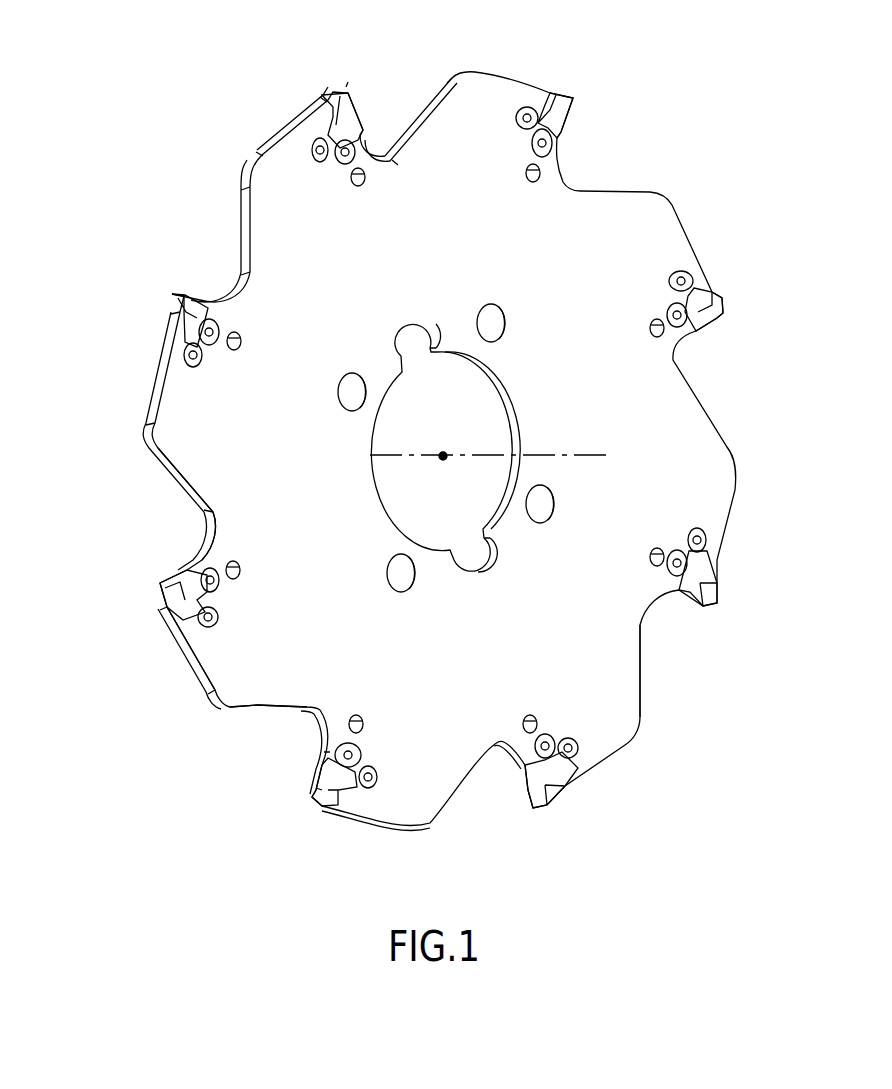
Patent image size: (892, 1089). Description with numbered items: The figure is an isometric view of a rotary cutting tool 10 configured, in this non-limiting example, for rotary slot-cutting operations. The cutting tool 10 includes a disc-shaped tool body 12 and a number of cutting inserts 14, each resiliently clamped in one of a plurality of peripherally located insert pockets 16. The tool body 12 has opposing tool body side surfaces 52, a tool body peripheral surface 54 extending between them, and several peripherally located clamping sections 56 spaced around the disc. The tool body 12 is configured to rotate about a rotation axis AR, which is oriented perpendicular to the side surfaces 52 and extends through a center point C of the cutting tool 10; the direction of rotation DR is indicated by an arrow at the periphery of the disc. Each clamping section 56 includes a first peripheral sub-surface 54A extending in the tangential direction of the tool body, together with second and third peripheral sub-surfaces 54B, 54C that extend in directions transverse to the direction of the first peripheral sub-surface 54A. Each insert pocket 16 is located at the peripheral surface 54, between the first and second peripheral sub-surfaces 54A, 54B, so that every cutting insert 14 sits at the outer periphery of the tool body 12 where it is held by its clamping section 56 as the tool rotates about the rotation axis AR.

The rotary cutting tool 10 is at (263, 77).
The tool body 12 is at (480, 122).
The cutting insert 14 is at (200, 297).
The insert pocket 16 is at (183, 353).
The tool body side surface 52 is at (623, 687).
The tool body peripheral surface 54 is at (180, 477).
The first peripheral sub-surface 54A is at (190, 658).
The second peripheral sub-surface 54B is at (207, 540).
The third peripheral sub-surface 54C is at (262, 705).
The clamping section 56 is at (137, 280).
The direction of rotation DR is at (752, 218).
The rotation axis AR is at (572, 418).
The center point C is at (440, 470).